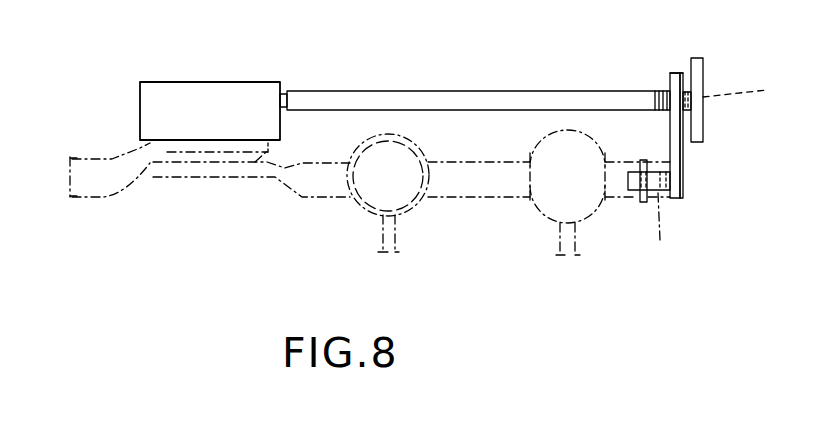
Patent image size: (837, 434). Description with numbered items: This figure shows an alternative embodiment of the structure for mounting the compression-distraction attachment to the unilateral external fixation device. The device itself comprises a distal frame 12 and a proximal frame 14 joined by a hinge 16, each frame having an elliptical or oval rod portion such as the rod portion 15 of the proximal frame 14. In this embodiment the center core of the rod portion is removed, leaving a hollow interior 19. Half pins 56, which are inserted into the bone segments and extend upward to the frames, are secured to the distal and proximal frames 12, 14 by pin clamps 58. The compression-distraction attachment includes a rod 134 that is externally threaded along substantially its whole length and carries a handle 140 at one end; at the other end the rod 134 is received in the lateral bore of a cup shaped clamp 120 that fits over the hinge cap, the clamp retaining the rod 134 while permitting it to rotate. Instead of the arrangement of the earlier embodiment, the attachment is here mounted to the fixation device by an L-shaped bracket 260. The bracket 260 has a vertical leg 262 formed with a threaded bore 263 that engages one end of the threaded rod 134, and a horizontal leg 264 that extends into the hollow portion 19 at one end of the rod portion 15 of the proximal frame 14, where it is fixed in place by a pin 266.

The distal frame 12 is at (103, 134).
The proximal frame 14 is at (619, 160).
The rod portion 15 is at (494, 158).
The hinge 16 is at (206, 190).
The hollow interior 19 is at (663, 231).
The half pin 56 is at (380, 250).
The pin clamp 58 is at (410, 224).
The cup shaped clamp 120 is at (261, 76).
The rod 134 is at (632, 90).
The handle 140 is at (698, 82).
The L-shaped bracket 260 is at (680, 66).
The vertical leg 262 is at (678, 130).
The threaded bore 263 is at (751, 94).
The horizontal leg 264 is at (633, 190).
The pin 266 is at (645, 160).